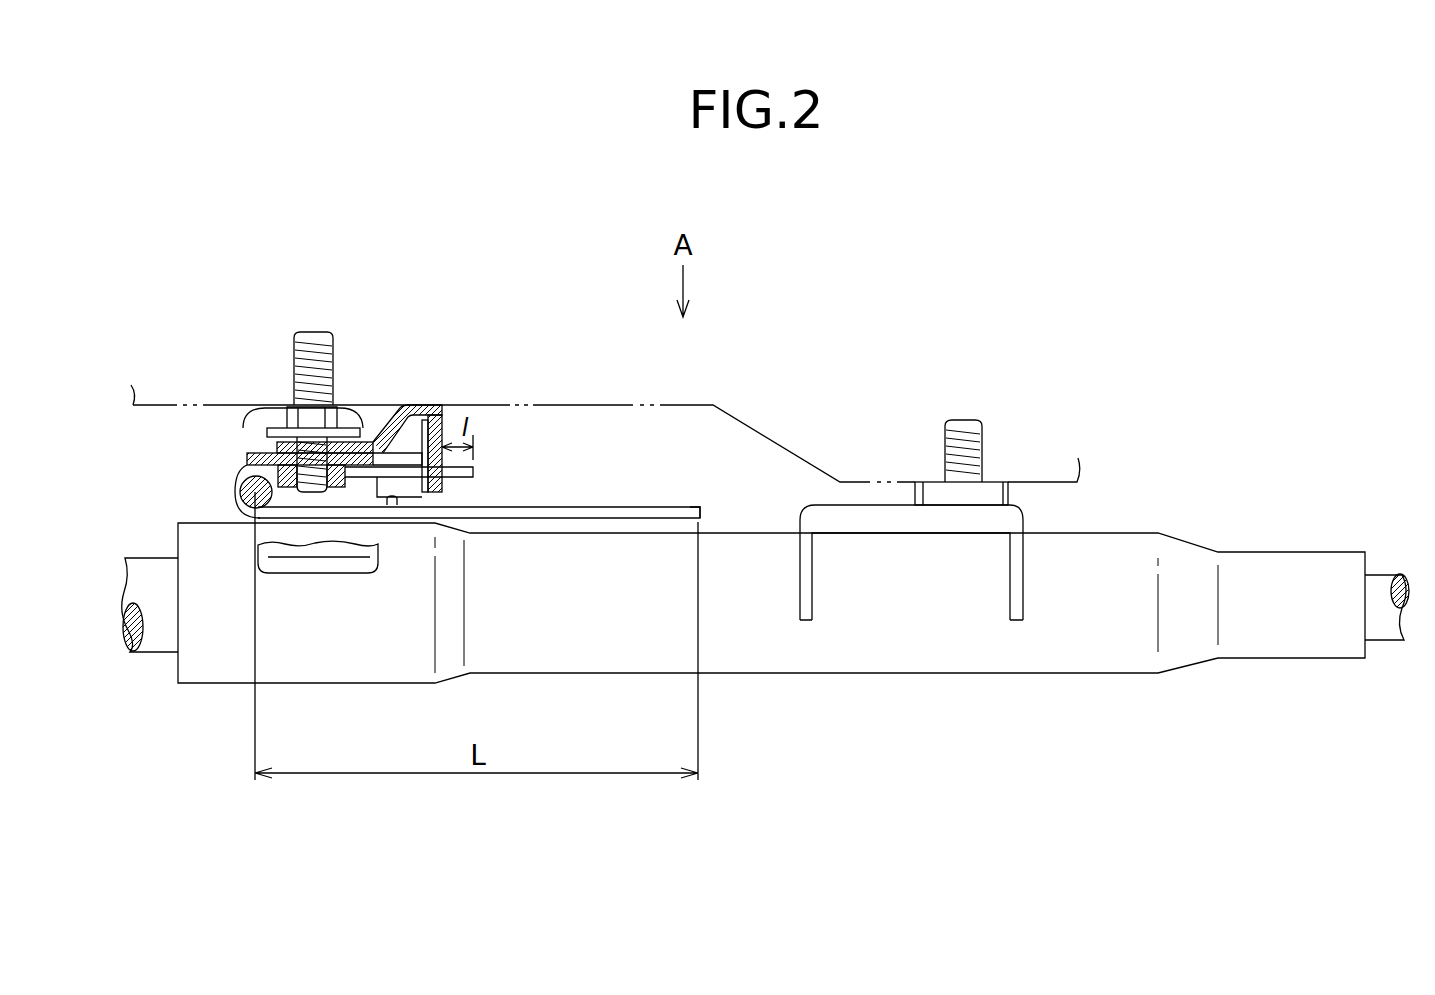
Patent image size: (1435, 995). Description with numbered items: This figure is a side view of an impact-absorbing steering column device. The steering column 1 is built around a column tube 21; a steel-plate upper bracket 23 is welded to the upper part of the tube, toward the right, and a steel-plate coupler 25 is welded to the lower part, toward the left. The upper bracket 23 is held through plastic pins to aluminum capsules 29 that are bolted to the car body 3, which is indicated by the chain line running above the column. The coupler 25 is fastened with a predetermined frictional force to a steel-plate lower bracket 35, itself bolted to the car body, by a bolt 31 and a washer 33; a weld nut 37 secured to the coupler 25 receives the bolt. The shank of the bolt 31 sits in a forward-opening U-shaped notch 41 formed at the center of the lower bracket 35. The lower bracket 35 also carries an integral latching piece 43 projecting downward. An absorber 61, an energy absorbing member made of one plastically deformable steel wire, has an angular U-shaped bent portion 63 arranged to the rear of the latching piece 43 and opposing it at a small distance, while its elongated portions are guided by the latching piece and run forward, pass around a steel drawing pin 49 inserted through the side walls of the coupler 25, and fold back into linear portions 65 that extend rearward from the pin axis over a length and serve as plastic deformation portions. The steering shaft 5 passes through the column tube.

The steering column 1 is at (761, 725).
The car body 3 is at (628, 405).
The steering shaft 5 is at (158, 636).
The column tube 21 is at (836, 660).
The upper bracket 23 is at (822, 518).
The coupler 25 is at (300, 562).
The aluminum capsule 29 is at (995, 492).
The bolt 31 is at (297, 420).
The washer 33 is at (267, 433).
The lower bracket 35 is at (381, 413).
The weld nut 37 is at (345, 483).
The U-shaped notch 41 is at (287, 445).
The latching piece 43 is at (448, 427).
The drawing pin 49 is at (240, 496).
The absorber 61 is at (532, 503).
The angular U-shaped bent portion 63 is at (473, 472).
The linear portion 65 is at (612, 507).